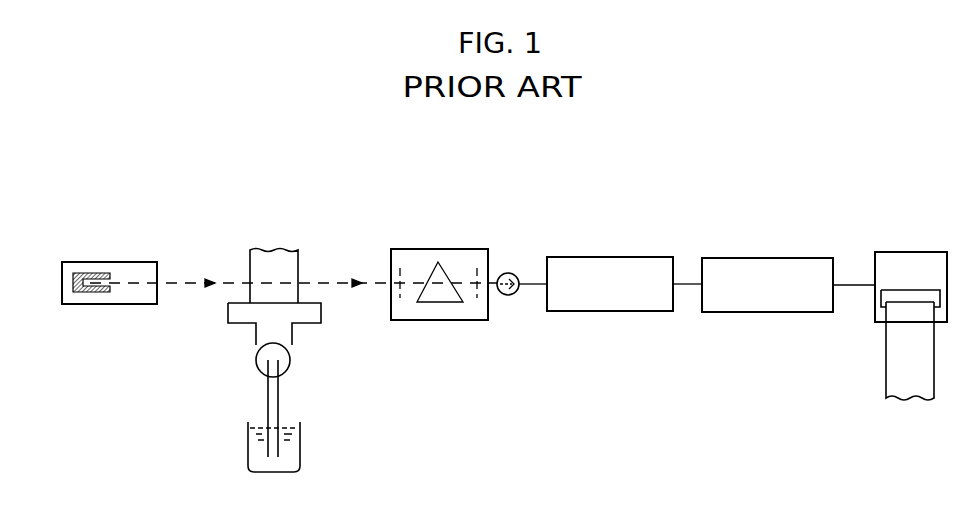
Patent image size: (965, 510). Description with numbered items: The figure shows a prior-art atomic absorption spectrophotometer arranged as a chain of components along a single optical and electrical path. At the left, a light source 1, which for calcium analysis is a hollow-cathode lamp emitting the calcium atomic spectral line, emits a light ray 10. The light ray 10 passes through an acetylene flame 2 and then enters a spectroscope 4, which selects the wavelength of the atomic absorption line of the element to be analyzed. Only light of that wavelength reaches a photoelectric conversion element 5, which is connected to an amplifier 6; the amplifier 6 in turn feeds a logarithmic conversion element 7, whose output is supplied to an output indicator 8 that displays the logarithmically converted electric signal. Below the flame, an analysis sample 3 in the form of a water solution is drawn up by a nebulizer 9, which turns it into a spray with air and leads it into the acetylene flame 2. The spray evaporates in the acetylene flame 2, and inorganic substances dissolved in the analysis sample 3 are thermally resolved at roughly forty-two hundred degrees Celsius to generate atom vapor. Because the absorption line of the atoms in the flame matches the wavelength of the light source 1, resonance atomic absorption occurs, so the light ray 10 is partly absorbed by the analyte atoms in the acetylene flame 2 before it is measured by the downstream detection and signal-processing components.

The light source 1 is at (112, 262).
The light ray 10 is at (184, 283).
The acetylene flame 2 is at (299, 260).
The nebulizer 9 is at (290, 358).
The analysis sample 3 is at (300, 440).
The spectroscope 4 is at (434, 250).
The photoelectric conversion element 5 is at (508, 272).
The amplifier 6 is at (603, 257).
The logarithmic conversion element 7 is at (761, 258).
The output indicator 8 is at (907, 252).